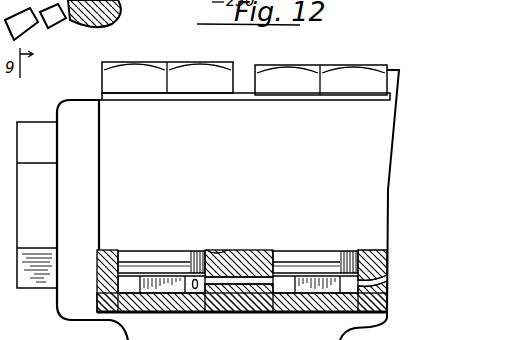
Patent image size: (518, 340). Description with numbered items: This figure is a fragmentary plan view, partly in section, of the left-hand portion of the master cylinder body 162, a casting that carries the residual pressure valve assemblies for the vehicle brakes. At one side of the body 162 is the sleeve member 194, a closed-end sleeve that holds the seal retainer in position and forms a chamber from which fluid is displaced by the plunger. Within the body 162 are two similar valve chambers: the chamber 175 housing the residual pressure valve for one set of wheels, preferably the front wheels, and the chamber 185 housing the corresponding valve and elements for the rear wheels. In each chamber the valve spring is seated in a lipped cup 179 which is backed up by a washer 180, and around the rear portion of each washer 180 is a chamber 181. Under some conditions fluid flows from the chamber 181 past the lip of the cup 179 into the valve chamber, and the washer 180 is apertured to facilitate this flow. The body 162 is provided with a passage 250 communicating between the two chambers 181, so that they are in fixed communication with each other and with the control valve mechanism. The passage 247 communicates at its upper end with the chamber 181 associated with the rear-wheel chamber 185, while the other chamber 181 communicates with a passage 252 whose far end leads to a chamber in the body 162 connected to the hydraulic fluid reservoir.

The master cylinder body 162 is at (388, 173).
The sleeve member 194 is at (46, 201).
The chamber 175 is at (262, 255).
The lipped cup 179 is at (180, 241).
The washer 180 is at (147, 263).
The chamber 185 is at (208, 253).
The chamber 181 is at (128, 280).
The passage 247 is at (195, 290).
The passage 250 is at (247, 285).
The passage 252 is at (385, 277).